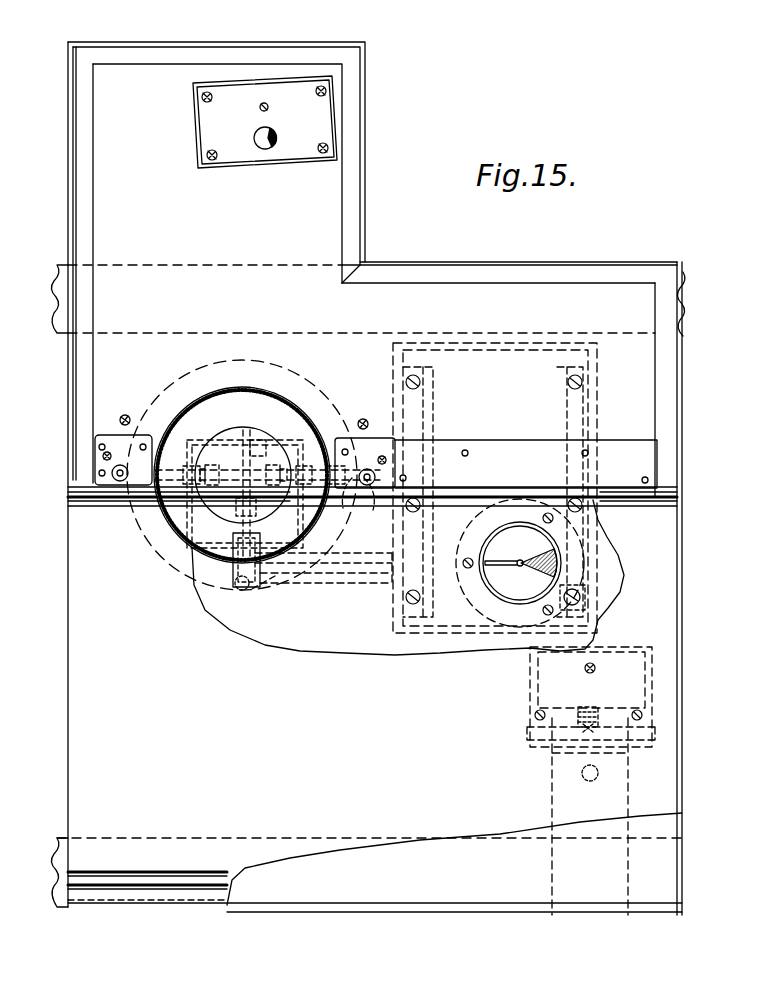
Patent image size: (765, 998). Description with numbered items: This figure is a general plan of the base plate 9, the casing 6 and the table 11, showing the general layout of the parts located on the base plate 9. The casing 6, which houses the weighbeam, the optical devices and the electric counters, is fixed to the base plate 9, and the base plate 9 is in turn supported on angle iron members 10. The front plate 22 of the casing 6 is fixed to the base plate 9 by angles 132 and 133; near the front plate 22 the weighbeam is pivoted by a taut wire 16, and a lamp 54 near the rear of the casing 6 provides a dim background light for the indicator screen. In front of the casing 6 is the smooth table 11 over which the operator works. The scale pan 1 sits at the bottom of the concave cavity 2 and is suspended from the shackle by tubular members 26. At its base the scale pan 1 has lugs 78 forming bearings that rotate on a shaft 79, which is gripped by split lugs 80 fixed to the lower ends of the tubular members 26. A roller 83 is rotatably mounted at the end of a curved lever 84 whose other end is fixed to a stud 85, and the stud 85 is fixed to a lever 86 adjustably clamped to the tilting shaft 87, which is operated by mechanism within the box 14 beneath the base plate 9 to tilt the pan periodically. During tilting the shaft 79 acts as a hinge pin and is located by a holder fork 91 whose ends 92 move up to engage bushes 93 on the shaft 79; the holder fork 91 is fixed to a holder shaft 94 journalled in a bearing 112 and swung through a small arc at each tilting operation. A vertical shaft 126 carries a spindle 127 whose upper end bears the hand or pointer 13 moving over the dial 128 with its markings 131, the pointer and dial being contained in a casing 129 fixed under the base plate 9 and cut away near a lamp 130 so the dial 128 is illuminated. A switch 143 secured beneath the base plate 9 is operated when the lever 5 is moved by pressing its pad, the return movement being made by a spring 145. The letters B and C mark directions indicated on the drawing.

The scale pan 1 is at (268, 430).
The cavity 2 is at (260, 391).
The lever 5 is at (630, 905).
The casing 6 is at (365, 103).
The base plate 9 is at (458, 300).
The angle iron members 10 is at (678, 266).
The table 11 is at (647, 590).
The hand or pointer 13 is at (520, 563).
The box 14 is at (598, 370).
The taut wire 16 is at (262, 954).
The front plate 22 is at (663, 495).
The tubular members 26 is at (120, 482).
The lamp 54 is at (277, 138).
The lugs 78 is at (219, 461).
The shaft 79 is at (231, 495).
The split lugs 80 is at (198, 468).
The roller 83 is at (232, 552).
The curved lever 84 is at (274, 484).
The stud 85 is at (294, 442).
The lever 86 is at (365, 442).
The tilting shaft 87 is at (348, 504).
The holder fork 91 is at (298, 520).
The holder fork ends 92 is at (286, 472).
The bushes 93 is at (273, 523).
The holder shaft 94 is at (357, 586).
The bearing 112 is at (320, 586).
The vertical shaft 126 is at (452, 613).
The spindle 127 is at (521, 559).
The dial 128 is at (495, 591).
The casing 129 is at (470, 536).
The lamp 130 is at (575, 583).
The markings 131 is at (538, 572).
The angle 132 is at (495, 447).
The angle 133 is at (112, 438).
The switch 143 is at (578, 712).
The spring 145 is at (587, 781).
The direction B is at (55, 604).
The direction C is at (196, 921).